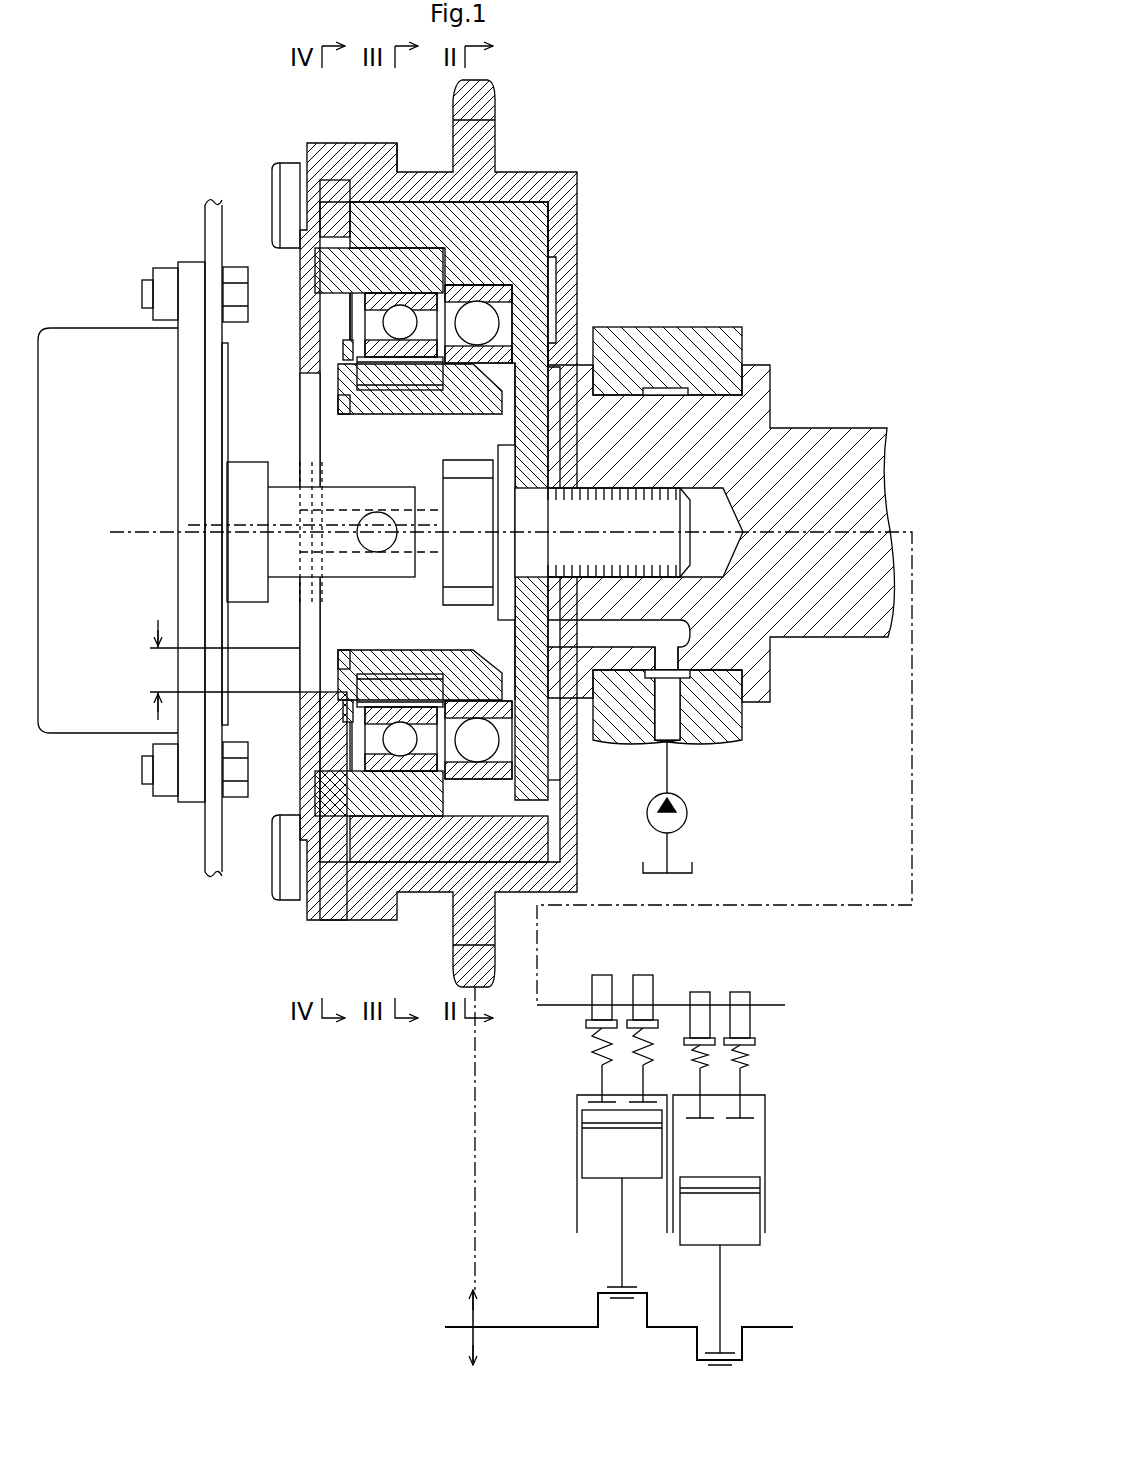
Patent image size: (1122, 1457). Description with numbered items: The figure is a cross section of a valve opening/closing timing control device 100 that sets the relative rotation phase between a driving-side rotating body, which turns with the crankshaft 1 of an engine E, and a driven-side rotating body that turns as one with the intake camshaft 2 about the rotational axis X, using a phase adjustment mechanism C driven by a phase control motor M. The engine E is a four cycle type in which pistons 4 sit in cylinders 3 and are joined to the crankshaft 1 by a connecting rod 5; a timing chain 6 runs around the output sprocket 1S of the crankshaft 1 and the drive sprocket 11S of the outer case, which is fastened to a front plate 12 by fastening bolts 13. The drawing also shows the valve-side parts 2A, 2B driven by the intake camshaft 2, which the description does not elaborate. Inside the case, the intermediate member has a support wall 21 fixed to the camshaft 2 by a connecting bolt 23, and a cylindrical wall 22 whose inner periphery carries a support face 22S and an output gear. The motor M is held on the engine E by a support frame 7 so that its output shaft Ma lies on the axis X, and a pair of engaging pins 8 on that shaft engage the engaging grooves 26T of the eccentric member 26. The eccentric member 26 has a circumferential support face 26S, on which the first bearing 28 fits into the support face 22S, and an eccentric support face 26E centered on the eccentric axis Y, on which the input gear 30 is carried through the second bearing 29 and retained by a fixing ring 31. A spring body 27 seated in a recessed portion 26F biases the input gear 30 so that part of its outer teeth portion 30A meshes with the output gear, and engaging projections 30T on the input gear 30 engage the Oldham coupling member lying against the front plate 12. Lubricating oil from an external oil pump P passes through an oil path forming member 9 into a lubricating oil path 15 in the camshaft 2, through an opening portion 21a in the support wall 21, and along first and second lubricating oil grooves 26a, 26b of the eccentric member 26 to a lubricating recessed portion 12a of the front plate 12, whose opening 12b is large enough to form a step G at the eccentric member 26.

The valve opening/closing timing control device 100 is at (205, 150).
The engine E is at (865, 142).
The phase control motor M is at (100, 328).
The output shaft Ma is at (290, 495).
The phase adjustment mechanism C is at (290, 380).
The rotational axis X is at (496, 762).
The eccentric axis Y is at (215, 522).
The step G is at (214, 670).
The crankshaft 1 is at (535, 1327).
The output sprocket 1S is at (465, 1300).
The intake camshaft 2 is at (845, 428).
The valve 2A is at (643, 975).
The valve 2B is at (640, 1108).
The cylinders 3 is at (577, 1100).
The pistons 4 is at (590, 1180).
The connecting rod 5 is at (620, 1265).
The timing chain 6 is at (472, 1150).
The support frame 7 is at (208, 220).
The engaging pins 8 is at (378, 520).
The oil path forming member 9 is at (720, 327).
The drive sprocket 11S is at (492, 970).
The front plate 12 is at (310, 145).
The lubricating recessed portion 12a is at (305, 790).
The opening 12b is at (308, 692).
The fastening bolts 13 is at (270, 200).
The lubricating oil path 15 is at (690, 638).
The support wall 21 is at (560, 420).
The opening portion 21a is at (548, 610).
The cylindrical wall 22 is at (515, 210).
The support face 22S is at (560, 780).
The connecting bolt 23 is at (690, 530).
The eccentric member 26 is at (365, 645).
The first lubricating oil grooves 26a is at (585, 383).
The second lubricating oil grooves 26b is at (340, 410).
The eccentric support face 26E is at (347, 710).
The recessed portion 26F is at (405, 388).
The circumferential support face 26S is at (462, 672).
The engaging grooves 26T is at (417, 548).
The spring body 27 is at (375, 330).
The first bearing 28 is at (556, 240).
The second bearing 29 is at (357, 293).
The input gear 30 is at (318, 762).
The outer teeth portion 30A is at (435, 780).
The engaging projections 30T is at (322, 270).
The fixing ring 31 is at (345, 350).
The oil pump P is at (690, 813).